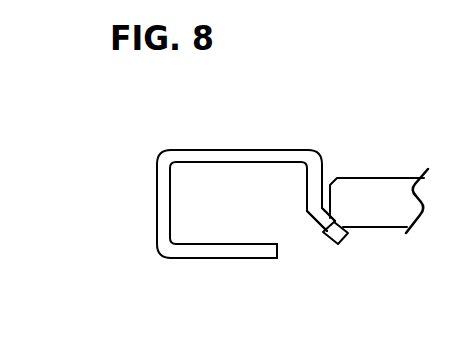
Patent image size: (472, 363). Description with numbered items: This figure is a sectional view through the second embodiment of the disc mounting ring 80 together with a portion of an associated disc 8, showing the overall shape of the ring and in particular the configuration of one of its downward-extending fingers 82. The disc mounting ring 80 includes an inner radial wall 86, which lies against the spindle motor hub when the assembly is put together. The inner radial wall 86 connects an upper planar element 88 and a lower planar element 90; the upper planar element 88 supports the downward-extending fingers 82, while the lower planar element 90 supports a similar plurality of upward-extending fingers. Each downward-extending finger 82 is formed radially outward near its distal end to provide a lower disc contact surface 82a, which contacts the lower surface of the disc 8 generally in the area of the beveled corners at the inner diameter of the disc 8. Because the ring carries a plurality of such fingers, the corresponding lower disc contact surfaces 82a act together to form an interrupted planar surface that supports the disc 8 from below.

The disc mounting ring 80 is at (145, 142).
The upper planar element 88 is at (235, 155).
The inner radial wall 86 is at (165, 202).
The lower planar element 90 is at (188, 252).
The downward-extending finger 82 is at (317, 178).
The lower disc contact surface 82a is at (328, 230).
The disc 8 is at (364, 186).